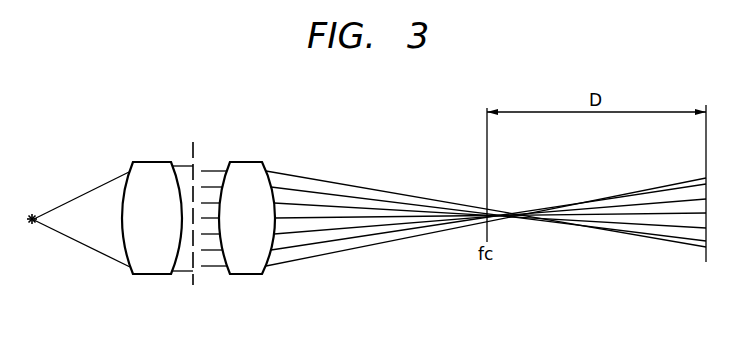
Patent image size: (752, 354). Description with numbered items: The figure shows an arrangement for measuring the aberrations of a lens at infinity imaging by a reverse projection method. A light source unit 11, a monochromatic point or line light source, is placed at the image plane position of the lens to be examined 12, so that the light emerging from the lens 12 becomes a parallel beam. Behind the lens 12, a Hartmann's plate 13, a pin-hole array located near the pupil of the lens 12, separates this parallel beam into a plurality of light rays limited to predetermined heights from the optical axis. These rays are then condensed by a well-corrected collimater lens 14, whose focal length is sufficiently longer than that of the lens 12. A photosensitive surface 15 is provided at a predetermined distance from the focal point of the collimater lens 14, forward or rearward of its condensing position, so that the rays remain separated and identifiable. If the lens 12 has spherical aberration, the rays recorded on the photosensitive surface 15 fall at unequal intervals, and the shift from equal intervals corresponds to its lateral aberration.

The light source unit 11 is at (32, 226).
The lens to be examined 12 is at (150, 275).
The Hartmann's plate 13 is at (192, 283).
The collimater lens 14 is at (244, 276).
The photosensitive surface 15 is at (706, 263).